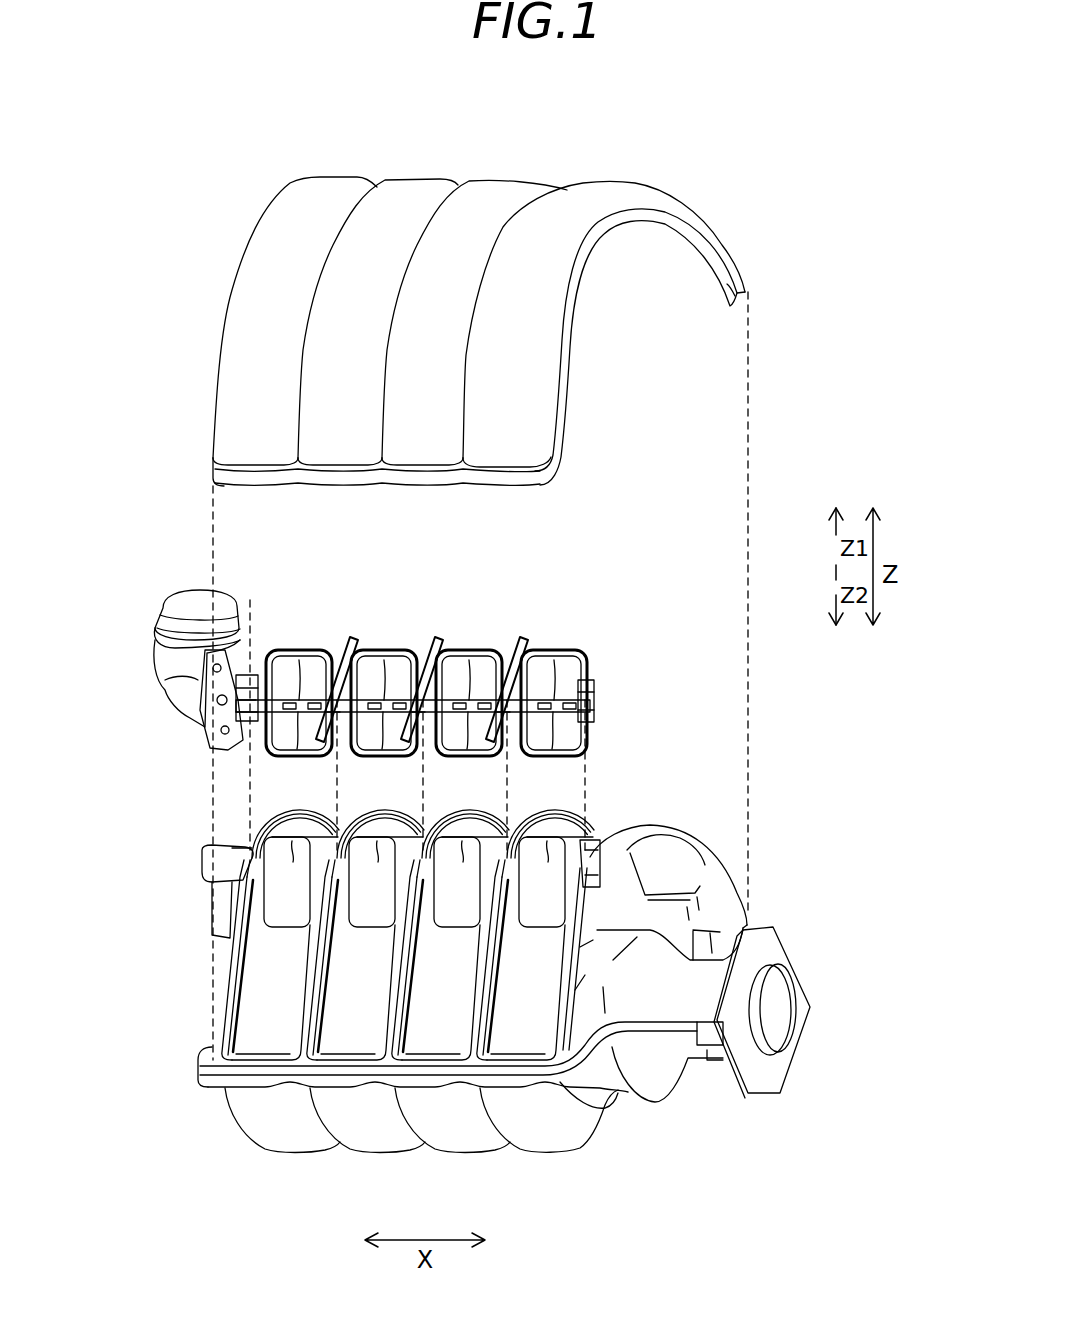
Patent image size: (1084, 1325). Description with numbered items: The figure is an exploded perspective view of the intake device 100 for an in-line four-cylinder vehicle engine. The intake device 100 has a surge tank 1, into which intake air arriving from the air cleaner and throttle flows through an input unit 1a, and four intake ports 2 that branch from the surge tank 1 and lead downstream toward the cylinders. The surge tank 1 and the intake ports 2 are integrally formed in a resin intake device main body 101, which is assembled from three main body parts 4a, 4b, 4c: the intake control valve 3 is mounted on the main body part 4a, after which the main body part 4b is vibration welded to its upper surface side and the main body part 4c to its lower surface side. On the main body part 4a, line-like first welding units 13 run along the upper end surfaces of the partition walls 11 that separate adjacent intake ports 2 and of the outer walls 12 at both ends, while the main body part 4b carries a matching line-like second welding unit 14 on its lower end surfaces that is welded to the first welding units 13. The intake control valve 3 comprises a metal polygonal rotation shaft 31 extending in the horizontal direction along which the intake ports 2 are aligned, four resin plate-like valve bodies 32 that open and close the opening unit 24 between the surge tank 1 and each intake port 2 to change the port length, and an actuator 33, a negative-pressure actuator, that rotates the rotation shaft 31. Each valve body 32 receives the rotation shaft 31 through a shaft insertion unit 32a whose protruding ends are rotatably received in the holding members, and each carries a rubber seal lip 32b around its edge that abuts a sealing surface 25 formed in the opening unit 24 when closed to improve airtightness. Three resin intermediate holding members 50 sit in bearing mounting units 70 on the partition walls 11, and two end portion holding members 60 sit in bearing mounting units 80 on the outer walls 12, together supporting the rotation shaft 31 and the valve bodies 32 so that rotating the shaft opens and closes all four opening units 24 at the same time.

The intake device 100 is at (750, 160).
The intake device main body 101 is at (479, 322).
The surge tank 1 is at (653, 953).
The input unit 1a is at (790, 1043).
The intake ports 2 is at (291, 1140).
The intake control valve 3 is at (153, 567).
The main body part 4a is at (673, 820).
The main body part 4b is at (641, 188).
The main body part 4c is at (600, 1107).
The partition walls 11 is at (314, 1021).
The outer walls 12 is at (229, 1021).
The first welding units 13 is at (229, 996).
The second welding unit 14 is at (736, 292).
The opening unit 24 is at (297, 913).
The sealing surface 25 is at (428, 882).
The rotation shaft 31 is at (205, 715).
The valve body 32 is at (288, 668).
The shaft insertion unit 32a is at (289, 722).
The seal lip 32b is at (322, 648).
The actuator 33 is at (160, 624).
The intermediate holding member 50 is at (352, 636).
The end portion holding member 60 is at (248, 680).
The bearing mounting unit 70 is at (332, 860).
The bearing mounting unit 80 is at (572, 853).